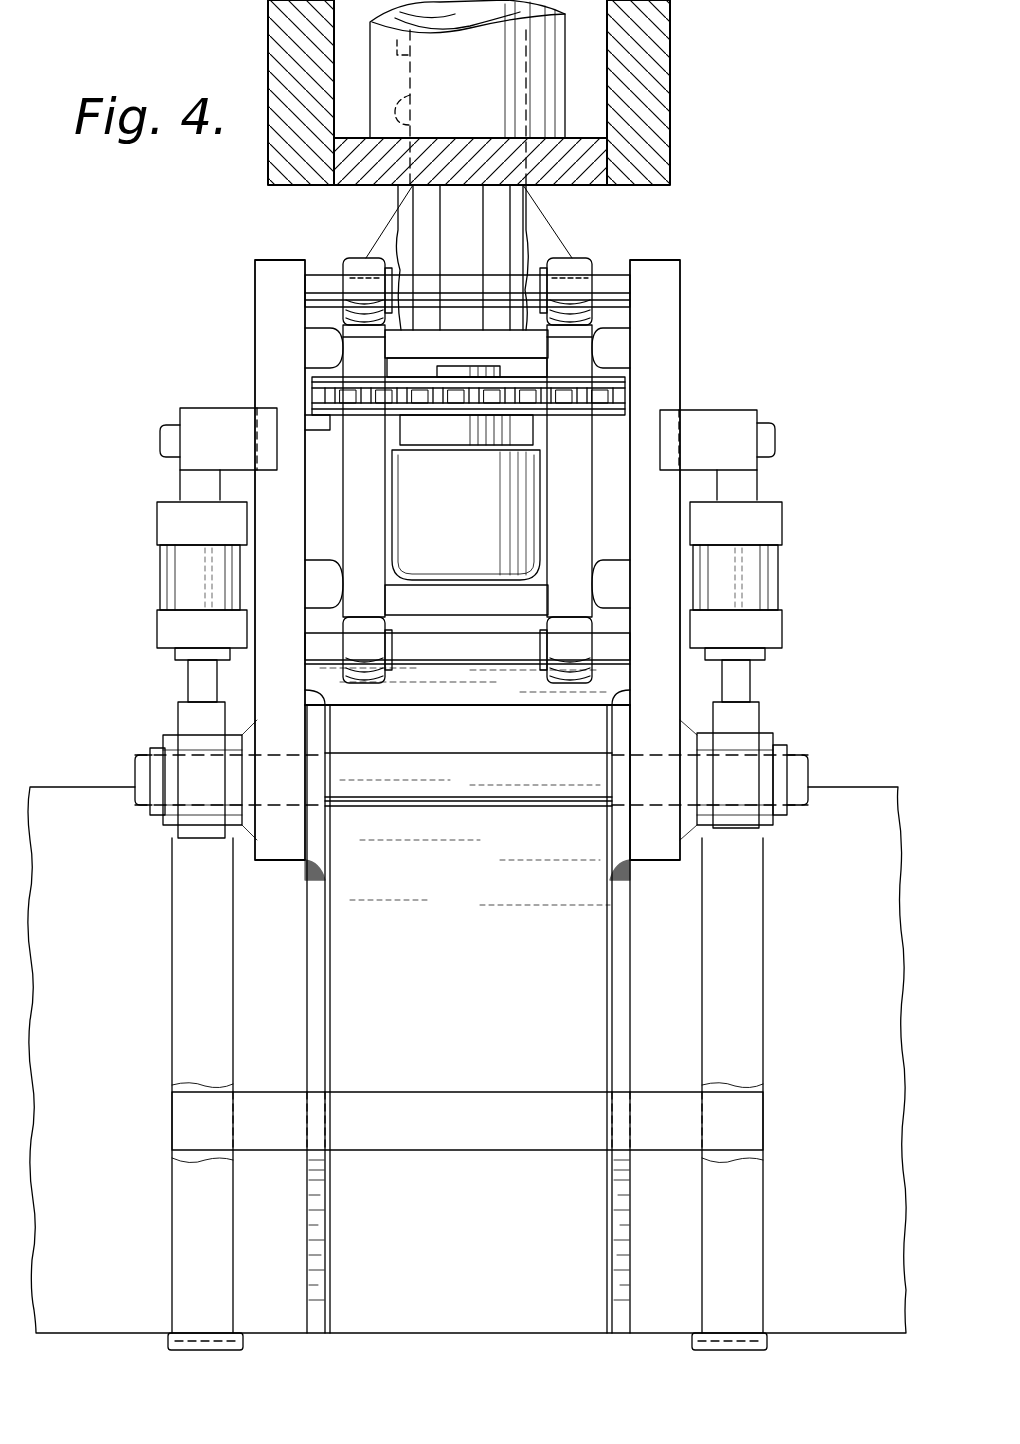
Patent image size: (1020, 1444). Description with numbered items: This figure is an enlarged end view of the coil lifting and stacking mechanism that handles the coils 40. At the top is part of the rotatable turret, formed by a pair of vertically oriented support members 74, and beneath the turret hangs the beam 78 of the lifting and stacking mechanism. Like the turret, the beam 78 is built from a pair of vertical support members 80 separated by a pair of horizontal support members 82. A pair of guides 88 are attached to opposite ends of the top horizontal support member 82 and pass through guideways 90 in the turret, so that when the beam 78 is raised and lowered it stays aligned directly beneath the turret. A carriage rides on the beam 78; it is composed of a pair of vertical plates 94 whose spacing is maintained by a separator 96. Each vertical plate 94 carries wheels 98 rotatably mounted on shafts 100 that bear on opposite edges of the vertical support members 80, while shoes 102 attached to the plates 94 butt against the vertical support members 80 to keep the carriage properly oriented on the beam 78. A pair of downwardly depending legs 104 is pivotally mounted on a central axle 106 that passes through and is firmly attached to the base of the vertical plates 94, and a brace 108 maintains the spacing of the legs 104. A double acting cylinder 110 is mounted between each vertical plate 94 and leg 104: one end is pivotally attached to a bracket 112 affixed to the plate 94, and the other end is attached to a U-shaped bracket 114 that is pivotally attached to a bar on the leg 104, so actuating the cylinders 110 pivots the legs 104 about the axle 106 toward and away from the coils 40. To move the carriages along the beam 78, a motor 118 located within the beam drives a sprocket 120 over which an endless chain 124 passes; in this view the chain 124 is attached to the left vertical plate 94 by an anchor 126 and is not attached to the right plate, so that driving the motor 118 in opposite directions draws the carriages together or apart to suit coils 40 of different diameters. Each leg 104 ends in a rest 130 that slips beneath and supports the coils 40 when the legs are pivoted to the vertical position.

The coil 40 is at (79, 776).
The vertically oriented support member 74 is at (268, 30).
The beam 78 is at (440, 313).
The vertical support member 80 is at (380, 511).
The horizontal support member 82 is at (480, 336).
The guide 88 is at (412, 98).
The guideway 90 is at (548, 108).
The vertical plate 94 is at (255, 330).
The separator 96 is at (305, 1008).
The wheel 98 is at (358, 275).
The shaft 100 is at (320, 275).
The shoe 102 is at (312, 343).
The leg 104 is at (180, 964).
The central axle 106 is at (790, 762).
The brace 108 is at (540, 1108).
The double acting cylinder 110 is at (190, 566).
The bracket 112 is at (235, 415).
The U-shaped bracket 114 is at (170, 797).
The motor 118 is at (478, 527).
The sprocket 120 is at (462, 405).
The endless chain 124 is at (620, 380).
The anchor 126 is at (325, 427).
The rest 130 is at (186, 1348).